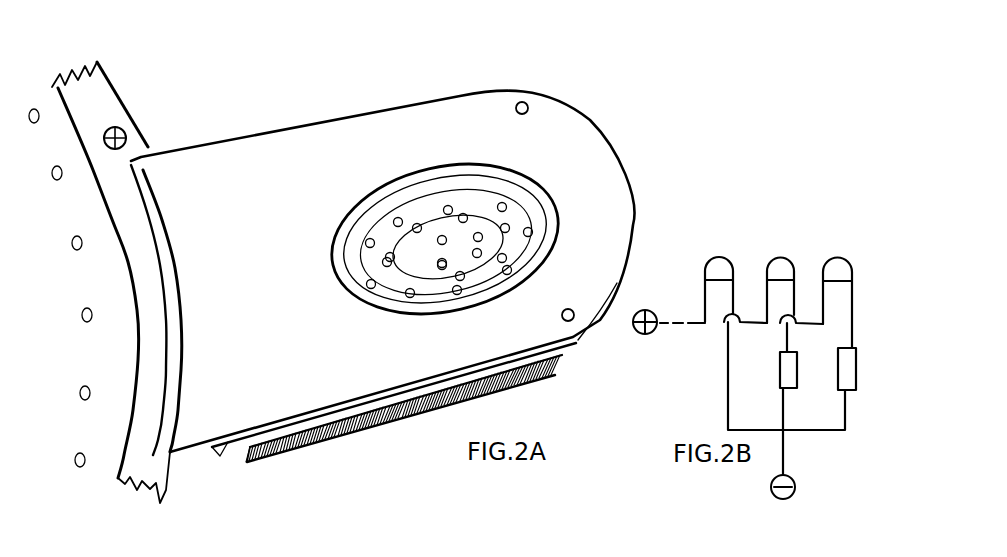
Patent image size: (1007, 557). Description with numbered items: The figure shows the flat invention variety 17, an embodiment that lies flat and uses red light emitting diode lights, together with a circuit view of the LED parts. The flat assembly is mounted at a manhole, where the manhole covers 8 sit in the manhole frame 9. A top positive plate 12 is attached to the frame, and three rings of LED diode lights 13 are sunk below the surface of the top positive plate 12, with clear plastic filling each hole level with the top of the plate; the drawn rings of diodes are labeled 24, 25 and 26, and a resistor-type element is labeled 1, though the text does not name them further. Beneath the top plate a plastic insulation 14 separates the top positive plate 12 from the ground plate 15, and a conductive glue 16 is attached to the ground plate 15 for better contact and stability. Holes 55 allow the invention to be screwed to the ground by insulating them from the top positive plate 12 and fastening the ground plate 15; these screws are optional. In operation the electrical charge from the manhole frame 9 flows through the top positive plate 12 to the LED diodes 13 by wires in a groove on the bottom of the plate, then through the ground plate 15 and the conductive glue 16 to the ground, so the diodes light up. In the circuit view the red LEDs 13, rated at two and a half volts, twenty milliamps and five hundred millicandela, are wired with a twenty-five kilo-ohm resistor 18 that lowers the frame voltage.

In FIG. 2B, the resistor / circuit element 1 is at (856, 368).
In FIG. 2A, the manhole covers 8 is at (60, 133).
In FIG. 2A, the manhole frame 9 is at (107, 105).
In FIG. 2A, the top positive plate 12 is at (259, 123).
In FIG. 2B, the rings of LED diode lights 13 is at (827, 258).
In FIG. 2A, the plastic insulation 14 is at (221, 448).
In FIG. 2A, the ground plate 15 is at (245, 452).
In FIG. 2A, the conductive glue 16 is at (413, 423).
In FIG. 2A, the flat invention variety 17 is at (652, 188).
In FIG. 2B, the 25K ohm resistor 18 is at (780, 370).
In FIG. 2A, the outer ring of holes 24 is at (367, 242).
In FIG. 2A, the middle ring of holes 25 is at (415, 226).
In FIG. 2A, the inner ring of holes 26 is at (441, 238).
In FIG. 2A, the holes 55 is at (527, 103).